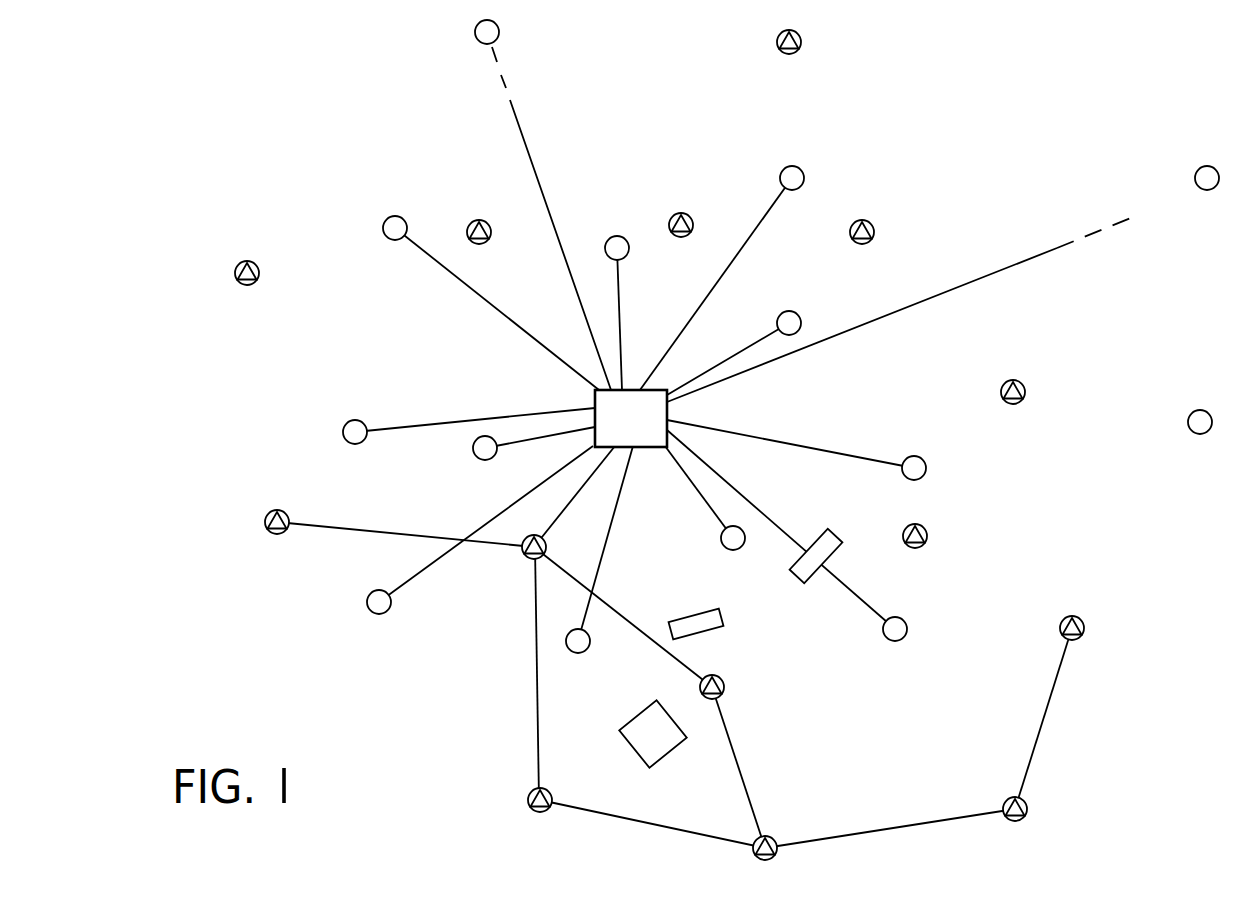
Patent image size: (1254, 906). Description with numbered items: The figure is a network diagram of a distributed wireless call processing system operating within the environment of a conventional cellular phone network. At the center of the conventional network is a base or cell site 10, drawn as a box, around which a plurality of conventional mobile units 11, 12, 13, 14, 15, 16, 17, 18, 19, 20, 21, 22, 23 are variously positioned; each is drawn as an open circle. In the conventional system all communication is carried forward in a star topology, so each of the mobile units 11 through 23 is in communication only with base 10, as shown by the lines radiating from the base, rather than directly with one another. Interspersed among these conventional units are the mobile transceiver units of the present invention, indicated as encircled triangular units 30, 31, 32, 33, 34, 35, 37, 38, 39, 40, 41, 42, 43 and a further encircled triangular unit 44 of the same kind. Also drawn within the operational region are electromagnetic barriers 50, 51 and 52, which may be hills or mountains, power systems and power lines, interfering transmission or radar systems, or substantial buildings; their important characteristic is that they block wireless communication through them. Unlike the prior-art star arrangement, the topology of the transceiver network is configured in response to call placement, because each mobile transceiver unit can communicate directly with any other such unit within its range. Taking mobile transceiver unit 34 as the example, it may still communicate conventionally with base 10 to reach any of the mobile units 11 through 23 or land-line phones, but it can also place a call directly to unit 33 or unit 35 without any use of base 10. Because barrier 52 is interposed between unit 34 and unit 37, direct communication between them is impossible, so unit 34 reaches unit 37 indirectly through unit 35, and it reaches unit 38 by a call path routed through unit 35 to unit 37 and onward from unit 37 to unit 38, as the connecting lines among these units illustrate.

The base or cell site 10 is at (665, 390).
The mobile unit 11 is at (617, 236).
The mobile unit 12 is at (476, 38).
The mobile unit 13 is at (391, 216).
The mobile unit 14 is at (360, 420).
The mobile unit 15 is at (480, 459).
The mobile unit 16 is at (379, 615).
The mobile unit 17 is at (588, 655).
The mobile unit 18 is at (721, 538).
The mobile unit 19 is at (907, 629).
The mobile unit 20 is at (913, 456).
The mobile unit 21 is at (1198, 168).
The mobile unit 22 is at (789, 311).
The mobile unit 23 is at (804, 176).
The mobile transceiver unit 30 is at (681, 213).
The mobile transceiver unit 31 is at (480, 220).
The mobile transceiver unit 32 is at (246, 261).
The mobile transceiver unit 33 is at (278, 510).
The mobile transceiver unit 34 is at (525, 560).
The mobile transceiver unit 35 is at (527, 800).
The mobile transceiver unit 37 is at (773, 840).
The mobile transceiver unit 38 is at (1028, 809).
The mobile transceiver unit 39 is at (928, 536).
The mobile transceiver unit 40 is at (1085, 628).
The mobile transceiver unit 41 is at (1194, 413).
The mobile transceiver unit 42 is at (1013, 380).
The mobile transceiver unit 43 is at (875, 232).
The repeater unit 44 is at (778, 47).
The electromagnetic barrier 50 is at (818, 534).
The electromagnetic barrier 51 is at (693, 610).
The electromagnetic barrier 52 is at (637, 752).